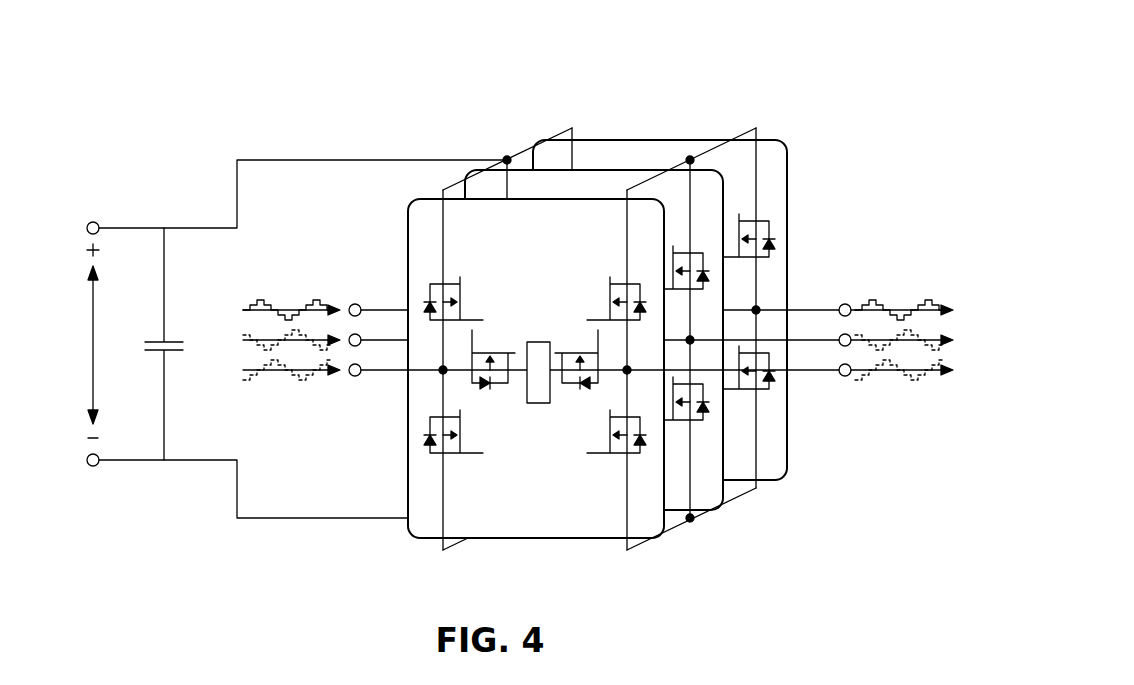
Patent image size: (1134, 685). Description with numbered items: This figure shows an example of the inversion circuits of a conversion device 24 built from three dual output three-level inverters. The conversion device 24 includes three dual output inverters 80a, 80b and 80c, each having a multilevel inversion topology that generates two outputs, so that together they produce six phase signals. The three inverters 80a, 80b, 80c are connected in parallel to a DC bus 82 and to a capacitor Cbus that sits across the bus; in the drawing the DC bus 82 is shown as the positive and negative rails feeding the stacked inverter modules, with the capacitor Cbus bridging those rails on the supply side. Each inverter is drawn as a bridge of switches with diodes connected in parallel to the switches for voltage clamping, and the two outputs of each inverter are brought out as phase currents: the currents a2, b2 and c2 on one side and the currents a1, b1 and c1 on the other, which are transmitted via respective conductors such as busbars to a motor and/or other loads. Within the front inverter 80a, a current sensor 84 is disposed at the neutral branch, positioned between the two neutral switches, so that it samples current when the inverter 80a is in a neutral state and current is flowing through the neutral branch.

The conversion device 24 is at (258, 40).
The DC bus 82 is at (281, 158).
The dual output inverter 80a is at (512, 520).
The dual output inverter 80b is at (535, 185).
The dual output inverter 80c is at (620, 158).
The current sensor 84 is at (541, 357).
The capacitor Cbus is at (175, 338).
The current a2 is at (296, 379).
The current b2 is at (285, 346).
The current c2 is at (293, 305).
The current a1 is at (938, 381).
The current b1 is at (875, 346).
The current c1 is at (870, 305).